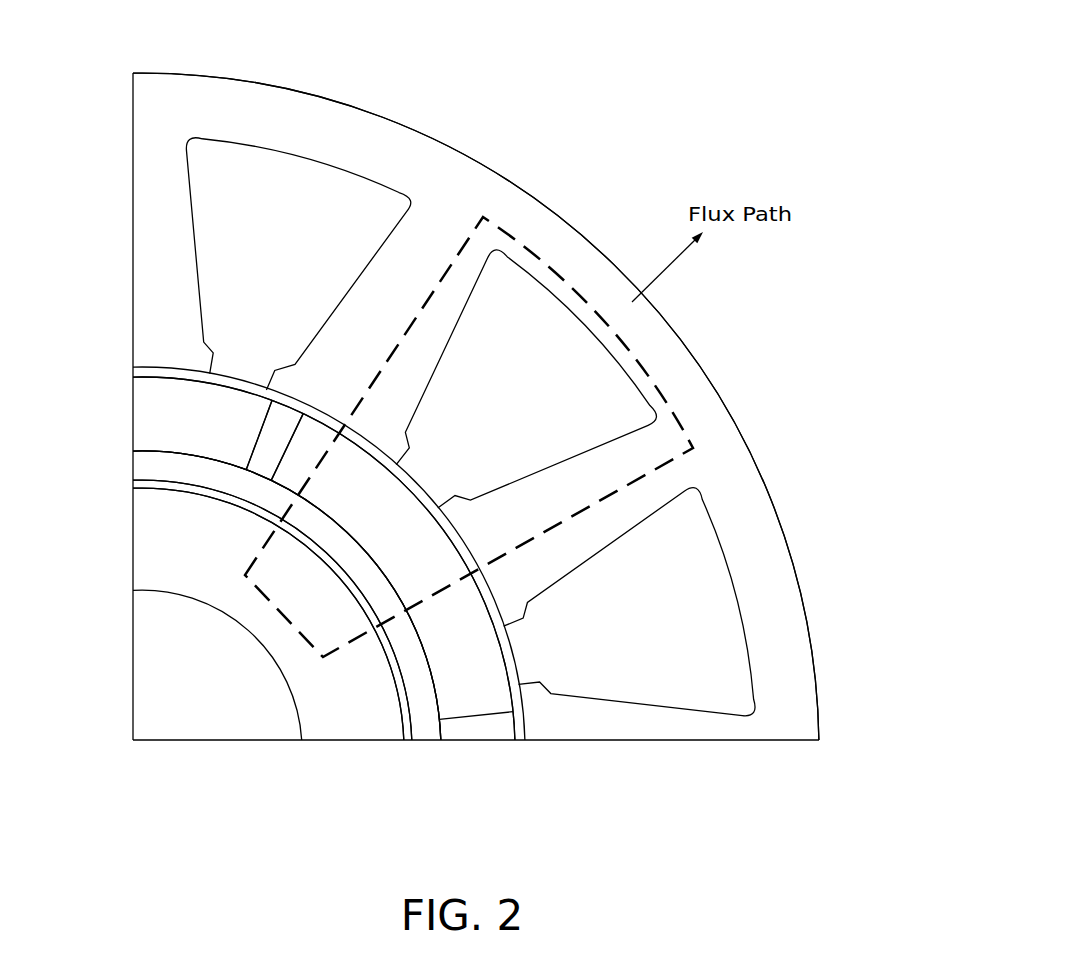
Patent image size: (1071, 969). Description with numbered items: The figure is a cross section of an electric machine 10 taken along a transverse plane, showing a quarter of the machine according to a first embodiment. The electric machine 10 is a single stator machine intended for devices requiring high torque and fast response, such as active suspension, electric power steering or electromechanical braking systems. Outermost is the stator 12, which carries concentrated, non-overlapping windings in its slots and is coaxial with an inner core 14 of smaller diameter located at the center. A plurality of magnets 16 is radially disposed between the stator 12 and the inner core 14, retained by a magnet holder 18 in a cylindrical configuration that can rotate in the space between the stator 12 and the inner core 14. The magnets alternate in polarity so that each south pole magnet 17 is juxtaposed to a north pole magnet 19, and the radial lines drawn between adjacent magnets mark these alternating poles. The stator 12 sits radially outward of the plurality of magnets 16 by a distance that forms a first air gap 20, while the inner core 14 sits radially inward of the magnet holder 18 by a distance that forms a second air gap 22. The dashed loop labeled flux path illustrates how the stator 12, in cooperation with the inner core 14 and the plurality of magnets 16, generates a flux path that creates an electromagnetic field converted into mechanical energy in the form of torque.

The electric machine 10 is at (664, 98).
The stator 12 is at (712, 408).
The inner core 14 is at (344, 722).
The plurality of magnets 16 is at (470, 702).
The south pole magnets 17 is at (192, 416).
The magnet holder 18 is at (430, 732).
The north pole magnets 19 is at (290, 475).
The first air gap 20 is at (517, 728).
The second air gap 22 is at (420, 732).